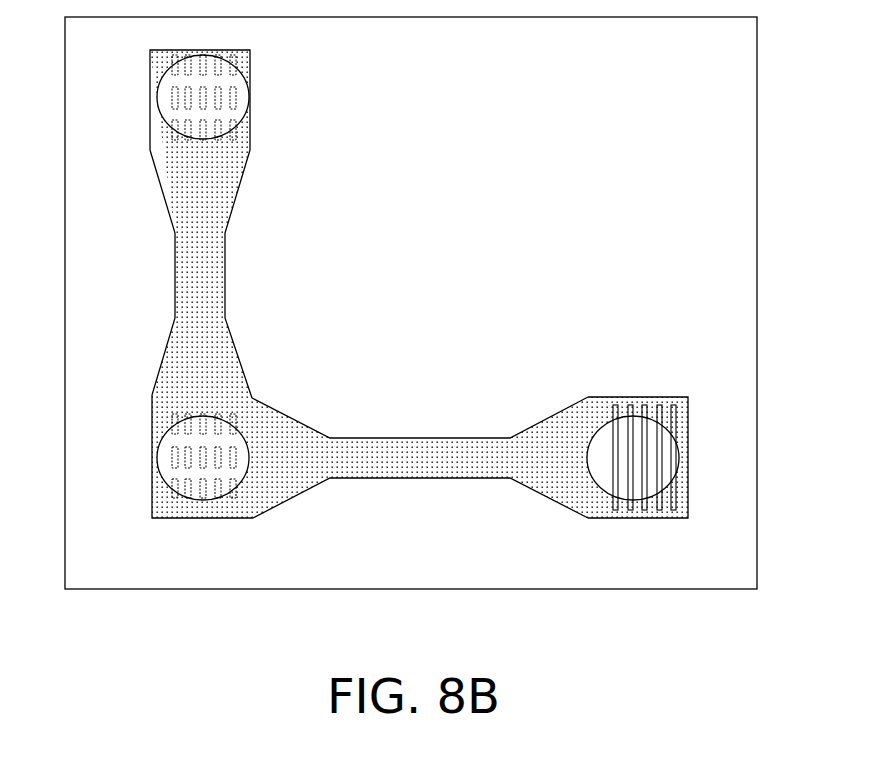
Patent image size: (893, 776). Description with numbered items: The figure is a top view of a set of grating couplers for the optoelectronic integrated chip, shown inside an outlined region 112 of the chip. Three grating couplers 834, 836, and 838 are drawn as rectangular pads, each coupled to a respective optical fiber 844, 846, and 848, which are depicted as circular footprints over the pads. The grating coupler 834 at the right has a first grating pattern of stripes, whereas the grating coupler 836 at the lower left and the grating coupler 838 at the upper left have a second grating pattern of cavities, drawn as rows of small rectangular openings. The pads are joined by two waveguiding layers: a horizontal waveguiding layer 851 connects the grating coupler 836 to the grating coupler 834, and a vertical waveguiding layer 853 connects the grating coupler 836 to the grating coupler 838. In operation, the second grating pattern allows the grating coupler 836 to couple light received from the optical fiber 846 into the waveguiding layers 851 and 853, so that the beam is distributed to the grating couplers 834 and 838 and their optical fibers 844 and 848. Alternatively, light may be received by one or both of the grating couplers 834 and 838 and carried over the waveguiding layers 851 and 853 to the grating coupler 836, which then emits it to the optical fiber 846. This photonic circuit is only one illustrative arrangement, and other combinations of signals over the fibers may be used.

The substrate 112 is at (735, 558).
The optical fiber 848 is at (160, 116).
The grating coupler 838 is at (170, 135).
The waveguiding layer 853 is at (185, 258).
The optical fiber 846 is at (160, 480).
The grating coupler 836 is at (170, 497).
The waveguiding layer 851 is at (407, 470).
The optical fiber 844 is at (680, 455).
The grating coupler 834 is at (617, 515).